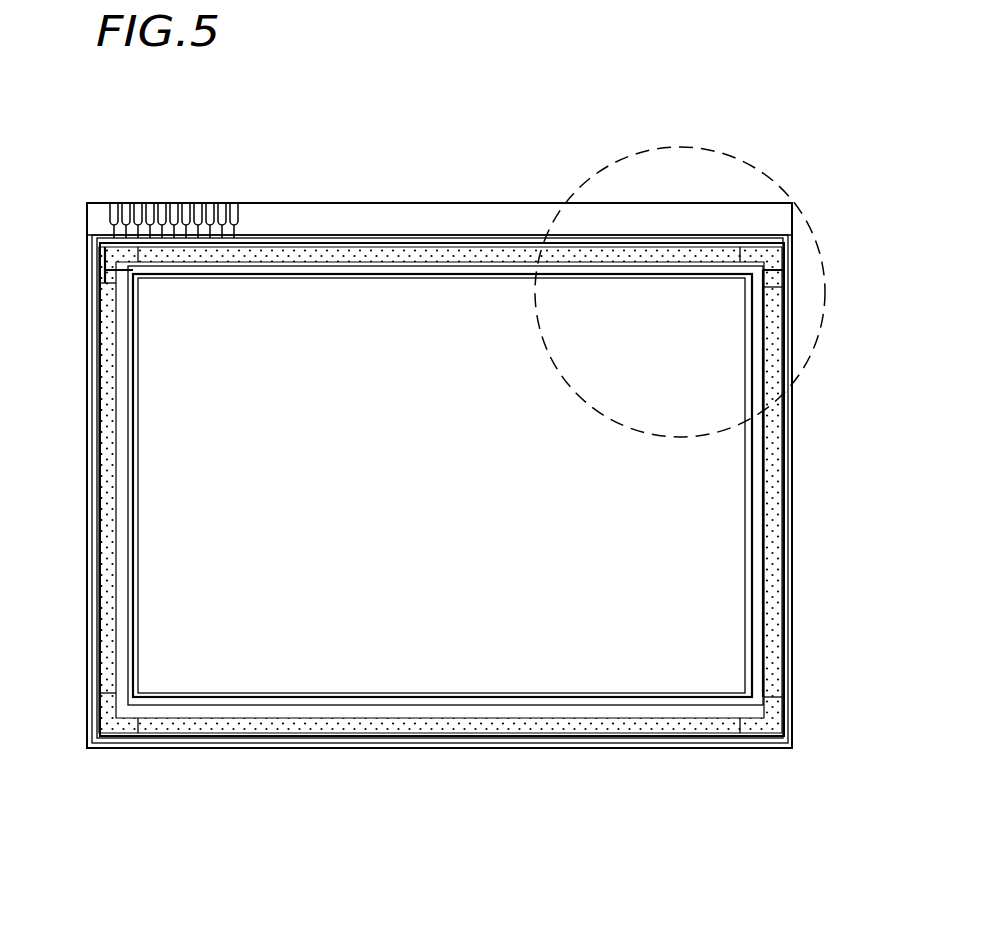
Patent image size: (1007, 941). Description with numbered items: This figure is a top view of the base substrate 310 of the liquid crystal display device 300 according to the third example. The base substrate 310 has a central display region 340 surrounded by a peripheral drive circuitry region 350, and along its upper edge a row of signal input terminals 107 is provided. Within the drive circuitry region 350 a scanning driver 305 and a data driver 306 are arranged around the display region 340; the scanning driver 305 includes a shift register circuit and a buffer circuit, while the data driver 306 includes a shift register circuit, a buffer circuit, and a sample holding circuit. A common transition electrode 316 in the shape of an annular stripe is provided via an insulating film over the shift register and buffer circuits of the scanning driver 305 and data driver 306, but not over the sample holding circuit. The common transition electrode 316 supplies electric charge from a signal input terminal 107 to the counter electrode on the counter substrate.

The signal input terminal 107 is at (174, 208).
The liquid crystal display device 300 is at (461, 421).
The scanning driver 305 is at (128, 470).
The data driver 306 is at (371, 274).
The base substrate 310 is at (476, 192).
The common transition electrode 316 is at (434, 262).
The display region 340 is at (441, 485).
The drive circuitry region 350 is at (775, 268).